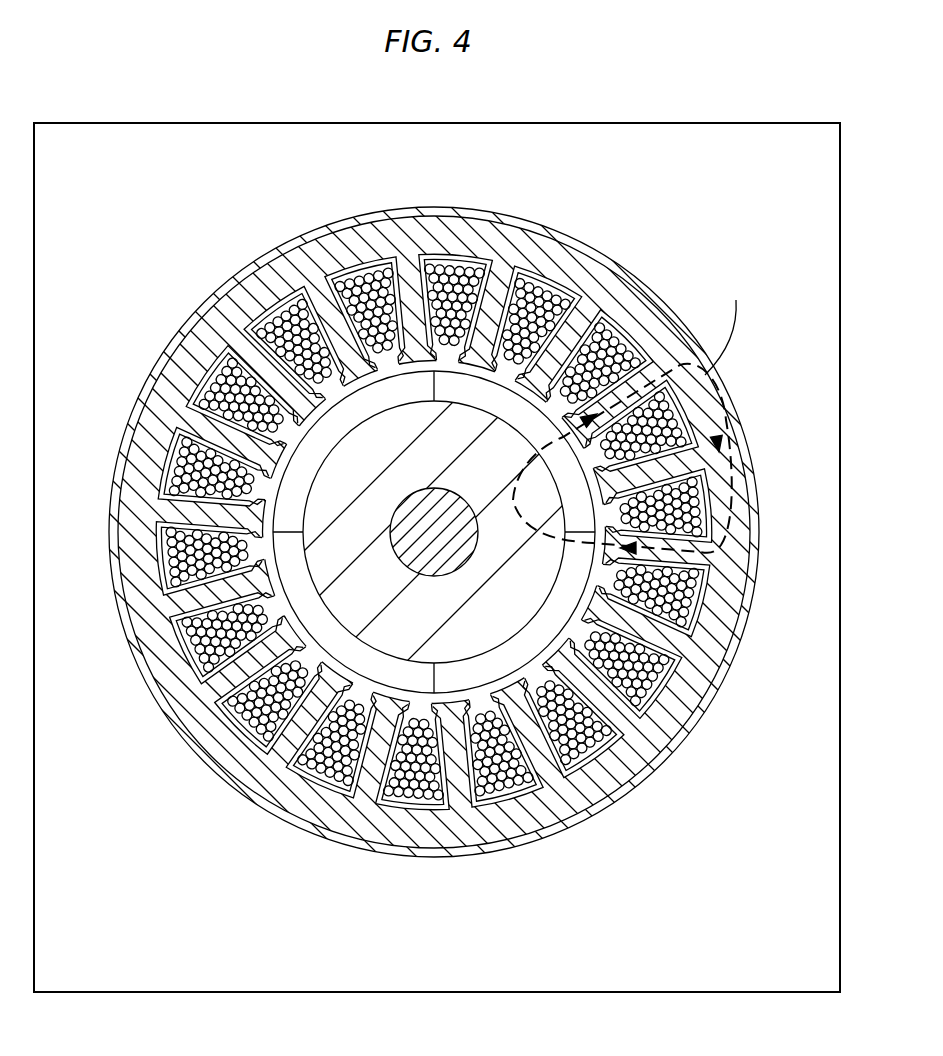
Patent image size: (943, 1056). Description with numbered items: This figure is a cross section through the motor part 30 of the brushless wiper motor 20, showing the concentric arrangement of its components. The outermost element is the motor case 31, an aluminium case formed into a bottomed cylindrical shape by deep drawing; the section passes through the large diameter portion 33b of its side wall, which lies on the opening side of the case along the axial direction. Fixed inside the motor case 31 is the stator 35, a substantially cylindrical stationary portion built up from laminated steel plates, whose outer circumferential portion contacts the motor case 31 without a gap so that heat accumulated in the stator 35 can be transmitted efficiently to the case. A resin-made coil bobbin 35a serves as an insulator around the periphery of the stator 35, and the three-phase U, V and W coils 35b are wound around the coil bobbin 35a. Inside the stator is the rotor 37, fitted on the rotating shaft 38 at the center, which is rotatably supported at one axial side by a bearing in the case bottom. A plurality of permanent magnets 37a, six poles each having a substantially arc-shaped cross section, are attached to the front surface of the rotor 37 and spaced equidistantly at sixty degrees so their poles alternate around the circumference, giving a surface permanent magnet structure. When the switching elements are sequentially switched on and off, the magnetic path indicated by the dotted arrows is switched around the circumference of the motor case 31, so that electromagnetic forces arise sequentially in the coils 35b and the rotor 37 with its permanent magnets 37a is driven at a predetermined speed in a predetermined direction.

The brushless wiper motor 20 is at (168, 254).
The motor part 30 is at (526, 856).
The motor case 31 is at (617, 808).
The large diameter portion 33b is at (741, 608).
The stator 35 is at (598, 285).
The coil bobbin 35a is at (322, 345).
The coils 35b is at (378, 268).
The rotor 37 is at (373, 594).
The permanent magnets 37a is at (478, 392).
The rotating shaft 38 is at (433, 533).